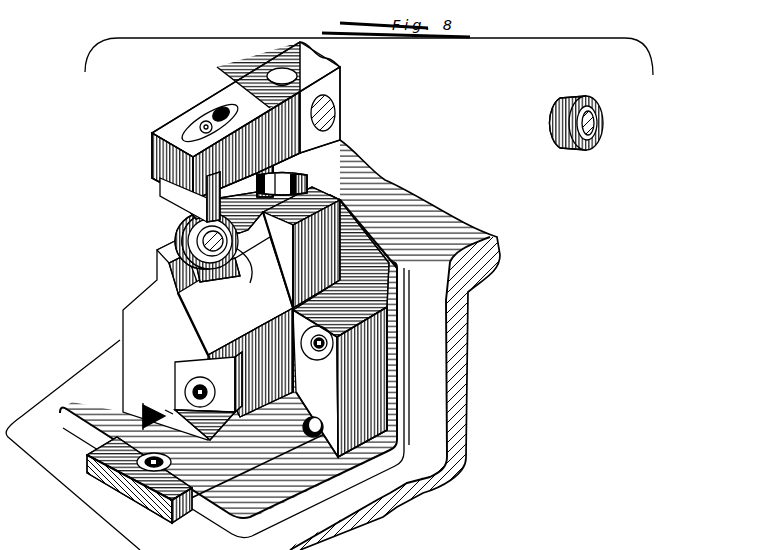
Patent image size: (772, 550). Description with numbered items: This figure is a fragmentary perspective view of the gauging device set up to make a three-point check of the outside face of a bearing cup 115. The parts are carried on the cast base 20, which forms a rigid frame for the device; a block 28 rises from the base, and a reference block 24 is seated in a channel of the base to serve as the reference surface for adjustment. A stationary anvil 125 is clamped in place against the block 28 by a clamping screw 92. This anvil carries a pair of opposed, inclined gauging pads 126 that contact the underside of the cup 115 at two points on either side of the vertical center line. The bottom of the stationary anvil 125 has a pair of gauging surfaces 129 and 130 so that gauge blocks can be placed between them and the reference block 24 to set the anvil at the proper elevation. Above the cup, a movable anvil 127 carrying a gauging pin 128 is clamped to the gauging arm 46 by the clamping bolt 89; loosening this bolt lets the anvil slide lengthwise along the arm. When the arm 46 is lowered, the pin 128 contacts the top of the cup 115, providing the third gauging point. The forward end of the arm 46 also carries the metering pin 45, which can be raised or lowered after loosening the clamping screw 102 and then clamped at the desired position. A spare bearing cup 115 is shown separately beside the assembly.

The base 20 is at (458, 387).
The reference block 24 is at (87, 473).
The block 28 is at (383, 377).
The metering pin 45 is at (303, 178).
The gauging arm 46 is at (339, 86).
The clamping bolt 89 is at (197, 125).
The clamping screw 92 is at (186, 389).
The clamping screw 102 is at (336, 111).
The bearing cup 115 is at (183, 228).
The stationary anvil 125 is at (132, 324).
The inclined gauging pads 126 is at (243, 250).
The movable anvil 127 is at (253, 173).
The gauging pin 128 is at (197, 212).
The gauging surface 129 is at (120, 412).
The gauging surface 130 is at (192, 430).